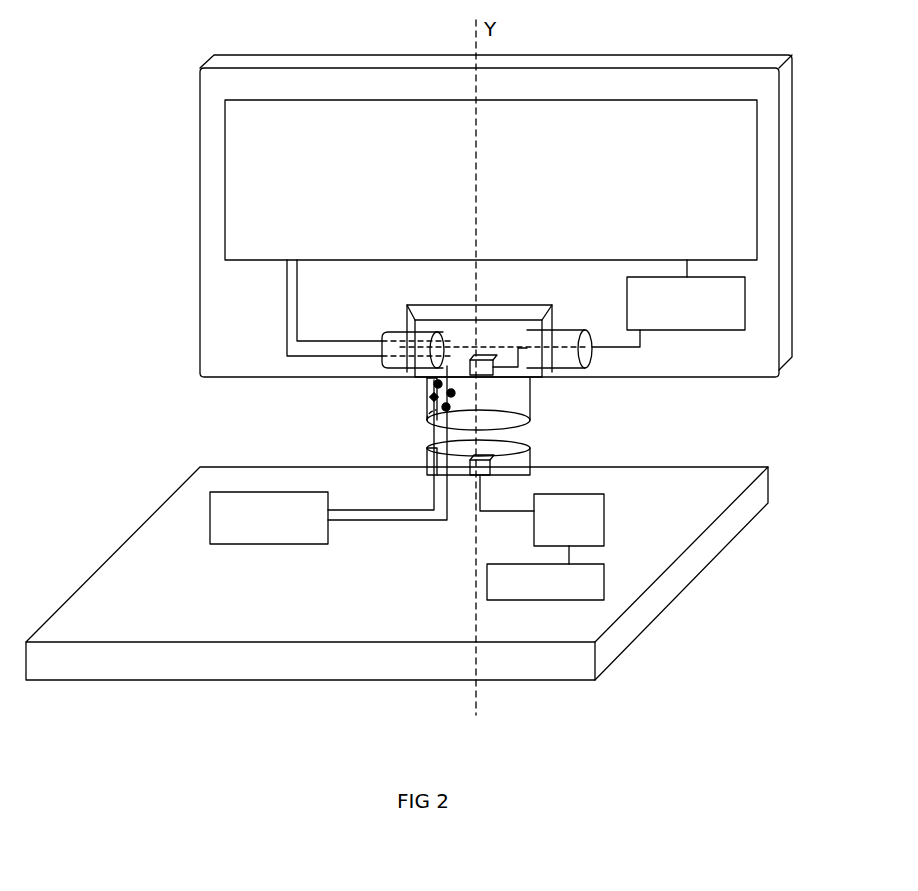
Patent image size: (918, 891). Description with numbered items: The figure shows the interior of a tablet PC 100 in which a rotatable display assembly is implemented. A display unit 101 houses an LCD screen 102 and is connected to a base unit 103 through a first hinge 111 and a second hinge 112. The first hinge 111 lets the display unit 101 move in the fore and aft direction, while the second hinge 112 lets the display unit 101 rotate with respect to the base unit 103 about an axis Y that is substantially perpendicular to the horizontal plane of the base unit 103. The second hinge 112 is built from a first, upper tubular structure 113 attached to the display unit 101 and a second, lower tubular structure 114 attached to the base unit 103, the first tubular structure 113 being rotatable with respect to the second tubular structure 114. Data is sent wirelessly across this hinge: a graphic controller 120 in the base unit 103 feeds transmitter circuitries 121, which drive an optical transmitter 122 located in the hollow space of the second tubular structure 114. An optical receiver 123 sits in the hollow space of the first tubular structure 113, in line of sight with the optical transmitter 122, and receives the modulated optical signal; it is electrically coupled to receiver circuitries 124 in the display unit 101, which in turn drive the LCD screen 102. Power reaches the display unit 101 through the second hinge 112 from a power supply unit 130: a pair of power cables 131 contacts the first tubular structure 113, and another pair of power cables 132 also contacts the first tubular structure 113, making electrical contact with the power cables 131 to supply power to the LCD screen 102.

The tablet PC 100 is at (105, 103).
The display unit 101 is at (793, 147).
The LCD screen 102 is at (728, 141).
The base unit 103 is at (718, 502).
The first hinge 111 is at (580, 283).
The second hinge 112 is at (611, 385).
The first tubular structure 113 is at (425, 412).
The second tubular structure 114 is at (430, 450).
The graphic controller 120 is at (565, 594).
The transmitter circuitries 121 is at (588, 524).
The optical transmitter 122 is at (530, 468).
The optical receiver 123 is at (532, 410).
The receiver circuitries 124 is at (717, 307).
The power supply unit 130 is at (258, 524).
The pair of power cables 131 is at (391, 521).
The another pair of power cables 132 is at (297, 306).